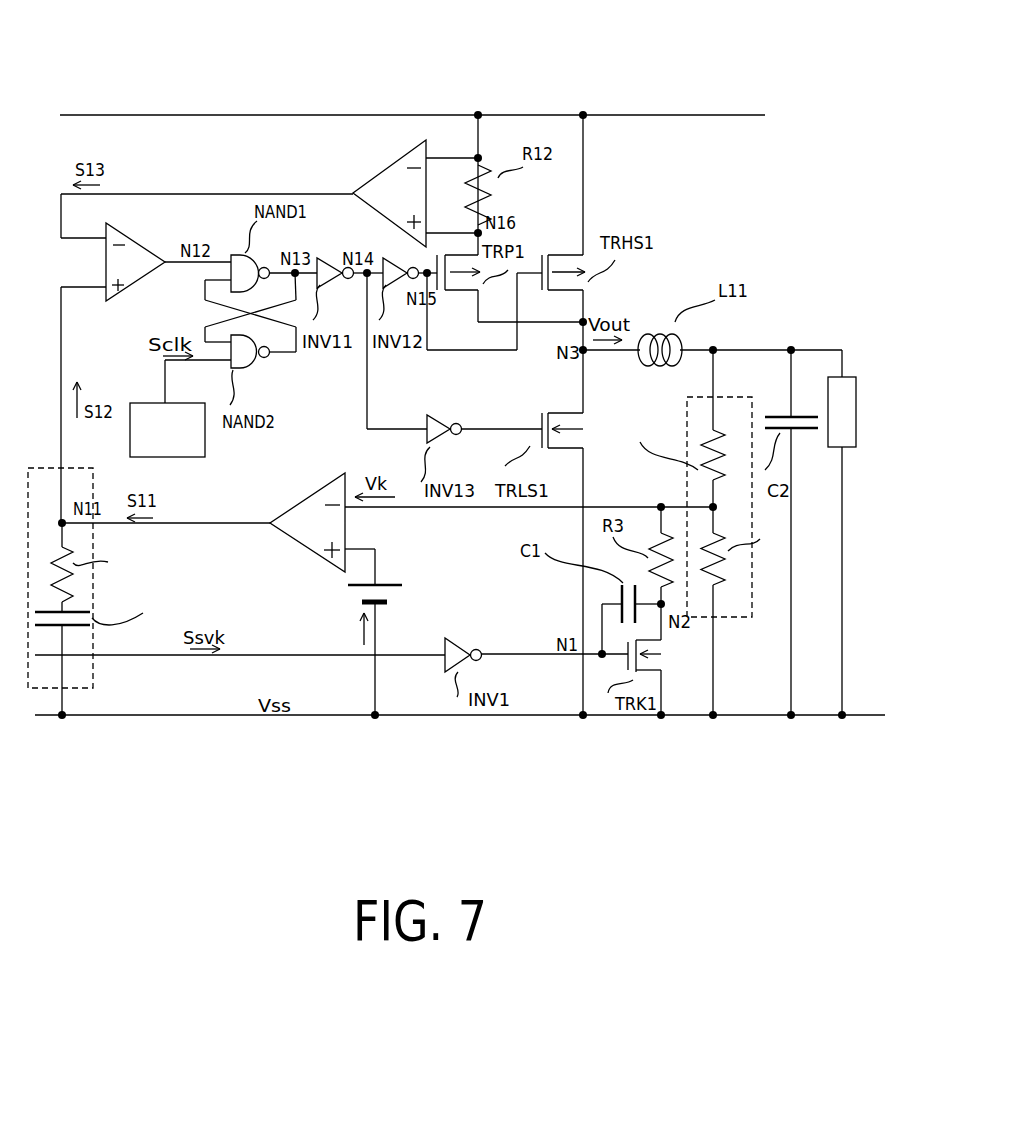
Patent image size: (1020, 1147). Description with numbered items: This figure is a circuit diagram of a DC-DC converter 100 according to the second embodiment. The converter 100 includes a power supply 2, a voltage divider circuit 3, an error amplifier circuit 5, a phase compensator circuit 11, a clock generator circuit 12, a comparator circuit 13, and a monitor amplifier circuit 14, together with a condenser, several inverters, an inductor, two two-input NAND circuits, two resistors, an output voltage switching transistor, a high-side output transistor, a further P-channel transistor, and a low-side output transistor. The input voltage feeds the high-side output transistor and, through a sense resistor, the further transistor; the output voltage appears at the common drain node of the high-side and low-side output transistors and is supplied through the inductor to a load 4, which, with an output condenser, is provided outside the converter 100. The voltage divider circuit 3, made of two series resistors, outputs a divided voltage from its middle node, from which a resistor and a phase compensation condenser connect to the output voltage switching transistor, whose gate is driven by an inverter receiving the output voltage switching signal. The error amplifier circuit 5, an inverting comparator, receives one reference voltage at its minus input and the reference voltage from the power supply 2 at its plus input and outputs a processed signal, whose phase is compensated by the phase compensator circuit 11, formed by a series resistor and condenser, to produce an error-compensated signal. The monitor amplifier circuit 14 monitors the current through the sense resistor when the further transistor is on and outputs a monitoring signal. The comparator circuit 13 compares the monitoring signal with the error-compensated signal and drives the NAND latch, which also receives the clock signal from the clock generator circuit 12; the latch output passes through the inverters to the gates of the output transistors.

The DC-DC converter 100 is at (800, 117).
The monitor amplifier circuit 14 is at (378, 172).
The comparator circuit 13 is at (137, 242).
The clock generator circuit 12 is at (165, 457).
The phase compensator circuit 11 is at (93, 676).
The error amplifier circuit 5 is at (310, 555).
The power supply 2 is at (405, 583).
The voltage divider circuit 3 is at (752, 620).
The load 4 is at (863, 377).